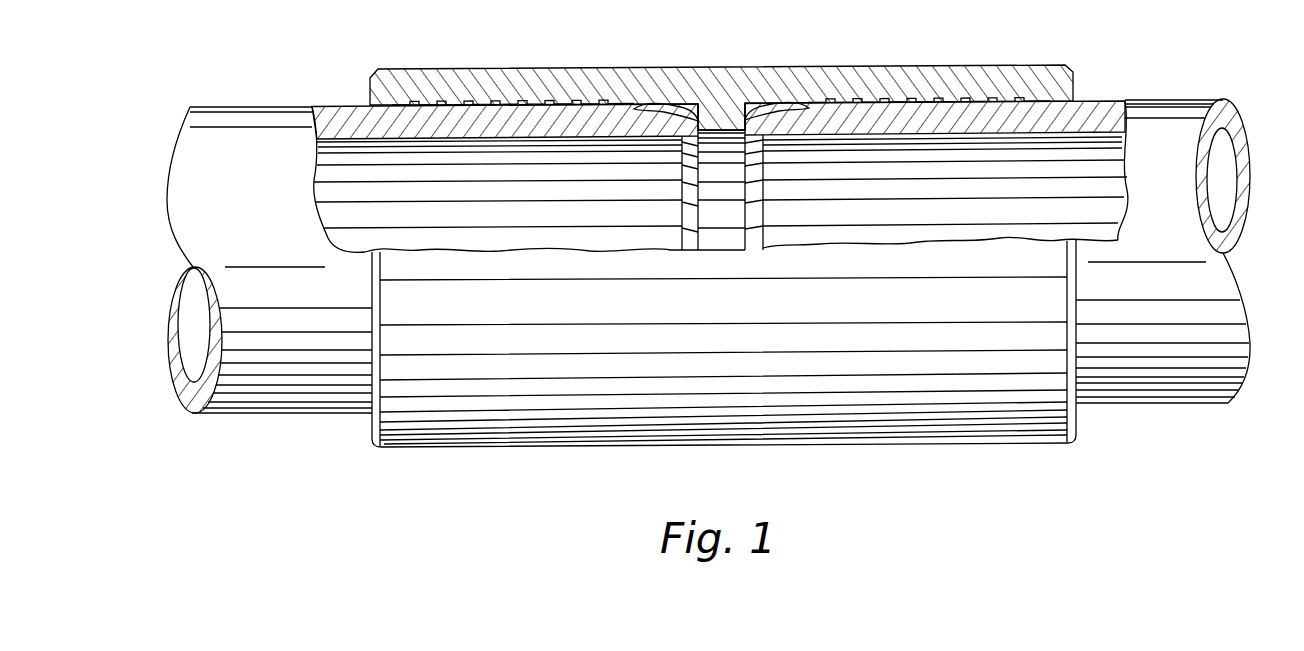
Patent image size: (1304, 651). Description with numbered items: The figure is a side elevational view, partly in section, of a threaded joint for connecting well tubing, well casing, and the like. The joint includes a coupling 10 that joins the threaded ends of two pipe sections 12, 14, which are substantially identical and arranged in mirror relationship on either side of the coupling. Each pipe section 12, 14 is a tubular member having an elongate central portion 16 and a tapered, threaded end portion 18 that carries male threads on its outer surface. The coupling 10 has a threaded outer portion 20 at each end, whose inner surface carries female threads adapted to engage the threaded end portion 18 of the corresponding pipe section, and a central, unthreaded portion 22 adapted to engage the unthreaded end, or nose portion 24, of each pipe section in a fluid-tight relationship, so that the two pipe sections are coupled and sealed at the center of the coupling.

The coupling 10 is at (718, 118).
The pipe section 12 is at (1174, 94).
The pipe section 14 is at (233, 101).
The central portion 16 is at (178, 194).
The threaded end portion 18 is at (488, 127).
The outer portion 20 is at (422, 82).
The central portion of coupling 22 is at (720, 82).
The nose portion 24 is at (721, 97).